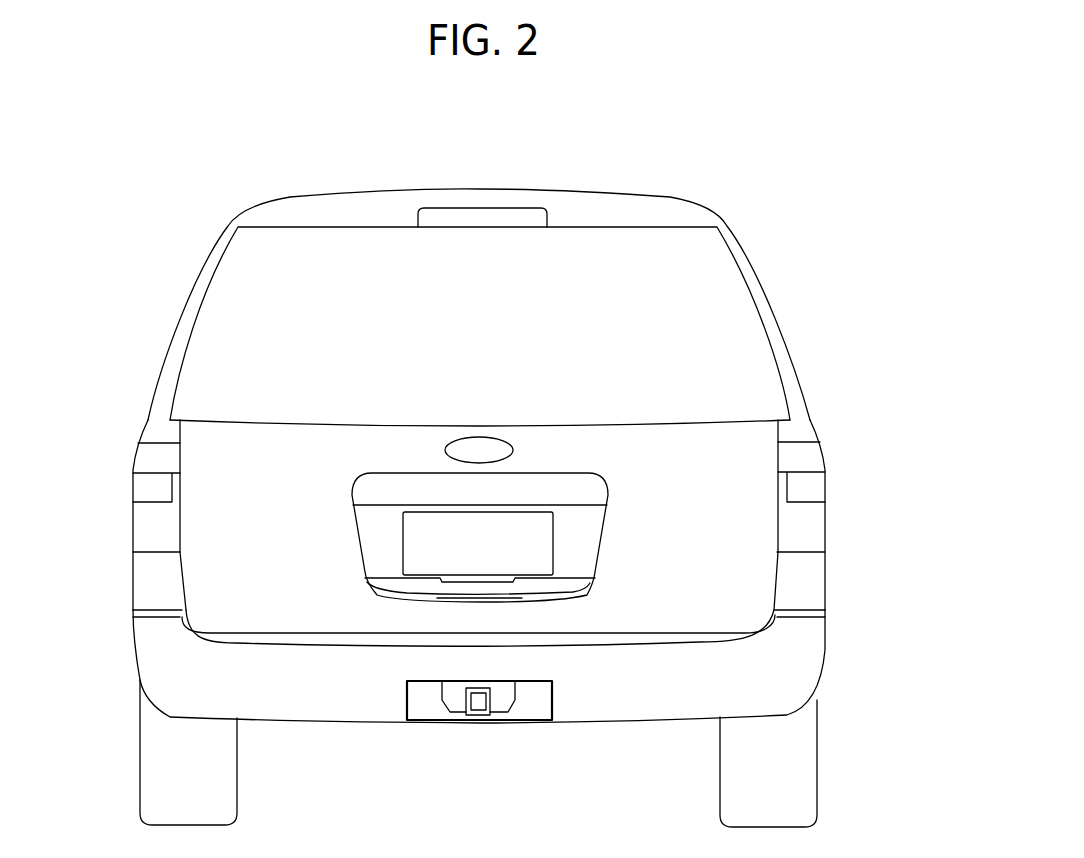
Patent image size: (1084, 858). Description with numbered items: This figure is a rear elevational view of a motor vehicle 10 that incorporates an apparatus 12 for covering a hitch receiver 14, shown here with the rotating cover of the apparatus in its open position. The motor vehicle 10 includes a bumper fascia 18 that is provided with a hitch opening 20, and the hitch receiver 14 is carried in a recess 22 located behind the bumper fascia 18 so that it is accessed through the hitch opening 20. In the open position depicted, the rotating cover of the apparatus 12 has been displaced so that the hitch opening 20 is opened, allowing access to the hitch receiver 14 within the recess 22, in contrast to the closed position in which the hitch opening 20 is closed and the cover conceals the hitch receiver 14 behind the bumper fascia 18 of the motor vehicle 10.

The motor vehicle 10 is at (685, 164).
The apparatus 12 is at (465, 758).
The hitch receiver 14 is at (482, 715).
The bumper fascia 18 is at (767, 668).
The hitch opening 20 is at (513, 720).
The recess 22 is at (426, 710).